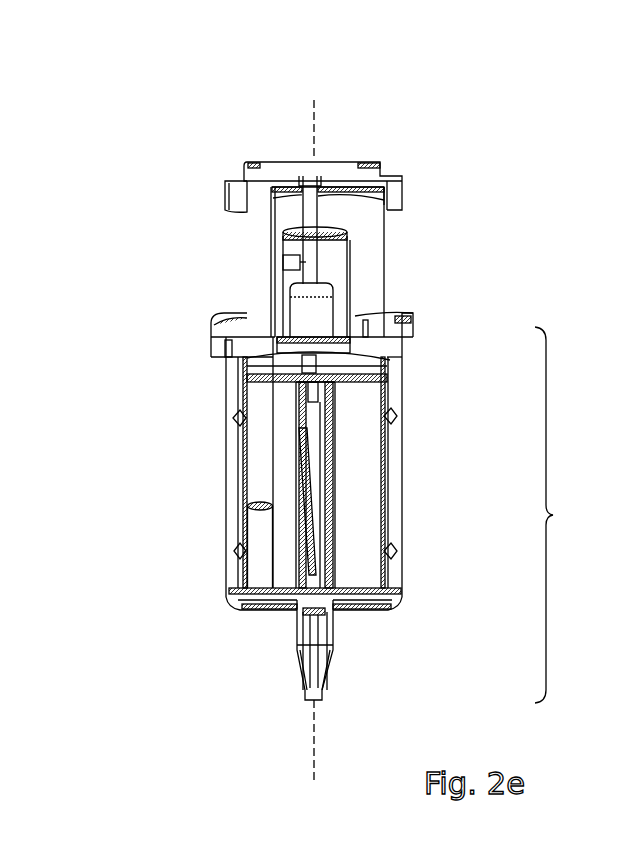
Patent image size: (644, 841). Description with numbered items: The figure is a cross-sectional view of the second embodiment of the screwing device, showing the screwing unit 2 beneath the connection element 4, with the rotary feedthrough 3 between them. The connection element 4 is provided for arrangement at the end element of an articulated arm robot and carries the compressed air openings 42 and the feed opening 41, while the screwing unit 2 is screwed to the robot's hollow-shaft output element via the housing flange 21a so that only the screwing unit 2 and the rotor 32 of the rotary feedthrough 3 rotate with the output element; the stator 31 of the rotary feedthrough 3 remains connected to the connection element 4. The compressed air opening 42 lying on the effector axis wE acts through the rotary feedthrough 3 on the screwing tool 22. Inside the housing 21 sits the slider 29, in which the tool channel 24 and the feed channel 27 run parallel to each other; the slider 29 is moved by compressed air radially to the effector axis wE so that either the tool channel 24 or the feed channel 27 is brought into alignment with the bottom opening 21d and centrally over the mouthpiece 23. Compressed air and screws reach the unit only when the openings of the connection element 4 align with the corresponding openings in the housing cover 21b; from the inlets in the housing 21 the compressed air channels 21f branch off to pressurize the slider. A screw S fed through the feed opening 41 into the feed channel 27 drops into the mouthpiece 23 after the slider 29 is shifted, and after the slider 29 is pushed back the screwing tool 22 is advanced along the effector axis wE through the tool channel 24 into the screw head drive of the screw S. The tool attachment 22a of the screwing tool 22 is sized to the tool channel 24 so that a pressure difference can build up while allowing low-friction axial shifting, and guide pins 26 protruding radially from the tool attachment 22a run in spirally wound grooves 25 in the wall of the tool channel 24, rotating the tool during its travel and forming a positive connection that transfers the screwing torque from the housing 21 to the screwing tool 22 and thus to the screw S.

The screwing unit 2 is at (557, 515).
The rotary feedthrough 3 is at (357, 288).
The connection element 4 is at (223, 183).
The housing 21 is at (220, 428).
The housing flange 21a is at (211, 316).
The housing cover 21b is at (210, 345).
The bottom opening 21d is at (330, 610).
The compressed air channels 21f is at (390, 412).
The screwing tool 22 is at (317, 498).
The tool attachment 22a is at (380, 386).
The mouthpiece 23 is at (292, 647).
The tool channel 24 is at (328, 490).
The spirally wound grooves 25 is at (300, 473).
The guide pins 26 is at (317, 405).
The feed channel 27 is at (253, 405).
The slider 29 is at (336, 460).
The stator 31 is at (345, 248).
The rotor 32 is at (322, 317).
The feed opening 41 is at (257, 178).
The compressed air openings 42 is at (308, 178).
The screw S is at (260, 533).
The effector axis wE is at (312, 748).